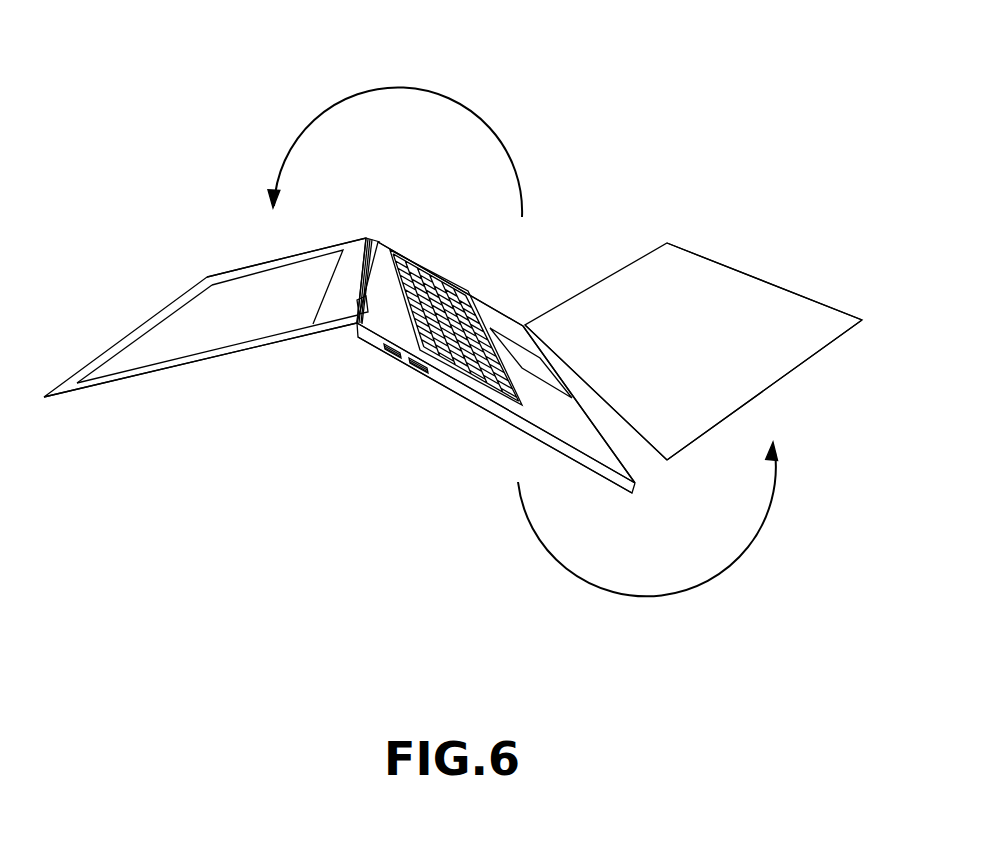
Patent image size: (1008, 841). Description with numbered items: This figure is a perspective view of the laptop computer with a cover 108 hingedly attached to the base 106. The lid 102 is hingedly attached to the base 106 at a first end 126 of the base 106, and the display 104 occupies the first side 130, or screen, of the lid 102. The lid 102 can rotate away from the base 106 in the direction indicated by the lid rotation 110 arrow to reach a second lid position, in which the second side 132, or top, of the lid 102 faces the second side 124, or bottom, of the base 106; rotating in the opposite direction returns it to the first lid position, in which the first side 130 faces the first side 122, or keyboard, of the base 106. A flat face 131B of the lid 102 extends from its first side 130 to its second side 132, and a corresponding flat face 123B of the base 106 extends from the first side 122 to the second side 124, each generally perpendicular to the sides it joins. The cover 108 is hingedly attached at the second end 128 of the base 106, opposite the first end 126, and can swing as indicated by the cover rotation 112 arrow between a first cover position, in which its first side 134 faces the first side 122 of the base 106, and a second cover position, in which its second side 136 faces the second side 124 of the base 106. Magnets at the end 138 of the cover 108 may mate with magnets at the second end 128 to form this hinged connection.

The lid 102 is at (157, 312).
The Display 104 is at (227, 328).
The base 106 is at (447, 390).
The cover 108 is at (654, 372).
The lid rotation 110 is at (395, 114).
The Cover Rotation 112 is at (648, 559).
The first side 122 is at (505, 308).
The face 123B is at (473, 400).
The second side 124 is at (503, 425).
The first end 126 is at (378, 228).
The second end 128 is at (518, 320).
The first side 130 is at (237, 265).
The face 131B is at (140, 380).
The second side 132 is at (162, 375).
The first side 134 is at (705, 273).
The second side 136 is at (803, 370).
The end 138 is at (618, 435).